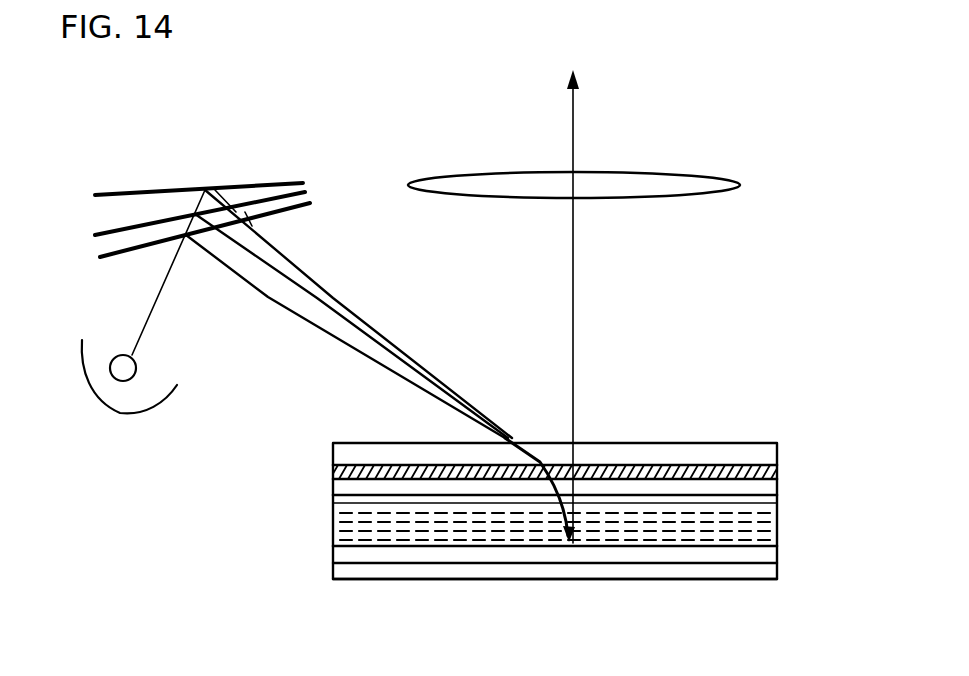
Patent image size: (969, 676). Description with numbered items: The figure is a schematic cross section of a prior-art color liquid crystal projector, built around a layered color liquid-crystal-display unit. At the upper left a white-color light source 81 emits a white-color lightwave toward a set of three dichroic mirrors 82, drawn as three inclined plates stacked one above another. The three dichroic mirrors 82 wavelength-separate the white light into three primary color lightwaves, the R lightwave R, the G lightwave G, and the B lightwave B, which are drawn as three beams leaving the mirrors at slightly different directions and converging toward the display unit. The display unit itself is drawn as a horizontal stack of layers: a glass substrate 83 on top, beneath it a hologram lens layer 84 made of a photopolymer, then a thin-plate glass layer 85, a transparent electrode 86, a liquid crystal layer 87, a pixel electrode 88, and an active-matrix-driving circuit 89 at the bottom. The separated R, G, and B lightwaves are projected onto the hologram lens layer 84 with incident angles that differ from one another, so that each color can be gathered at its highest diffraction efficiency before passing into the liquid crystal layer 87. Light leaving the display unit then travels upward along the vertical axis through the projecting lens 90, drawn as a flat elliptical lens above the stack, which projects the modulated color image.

The white-color light source 81 is at (137, 413).
The three dichroic mirrors 82 is at (132, 193).
The glass substrate 83 is at (640, 452).
The hologram lens layer 84 is at (738, 467).
The thin-plate glass layer 85 is at (763, 490).
The transparent electrode 86 is at (777, 503).
The liquid crystal layer 87 is at (767, 535).
The pixel electrode 88 is at (758, 558).
The active-matrix-driving circuit 89 is at (743, 573).
The projecting lens 90 is at (670, 174).
The R lightwave R is at (270, 295).
The G lightwave G is at (327, 300).
The B lightwave B is at (298, 258).